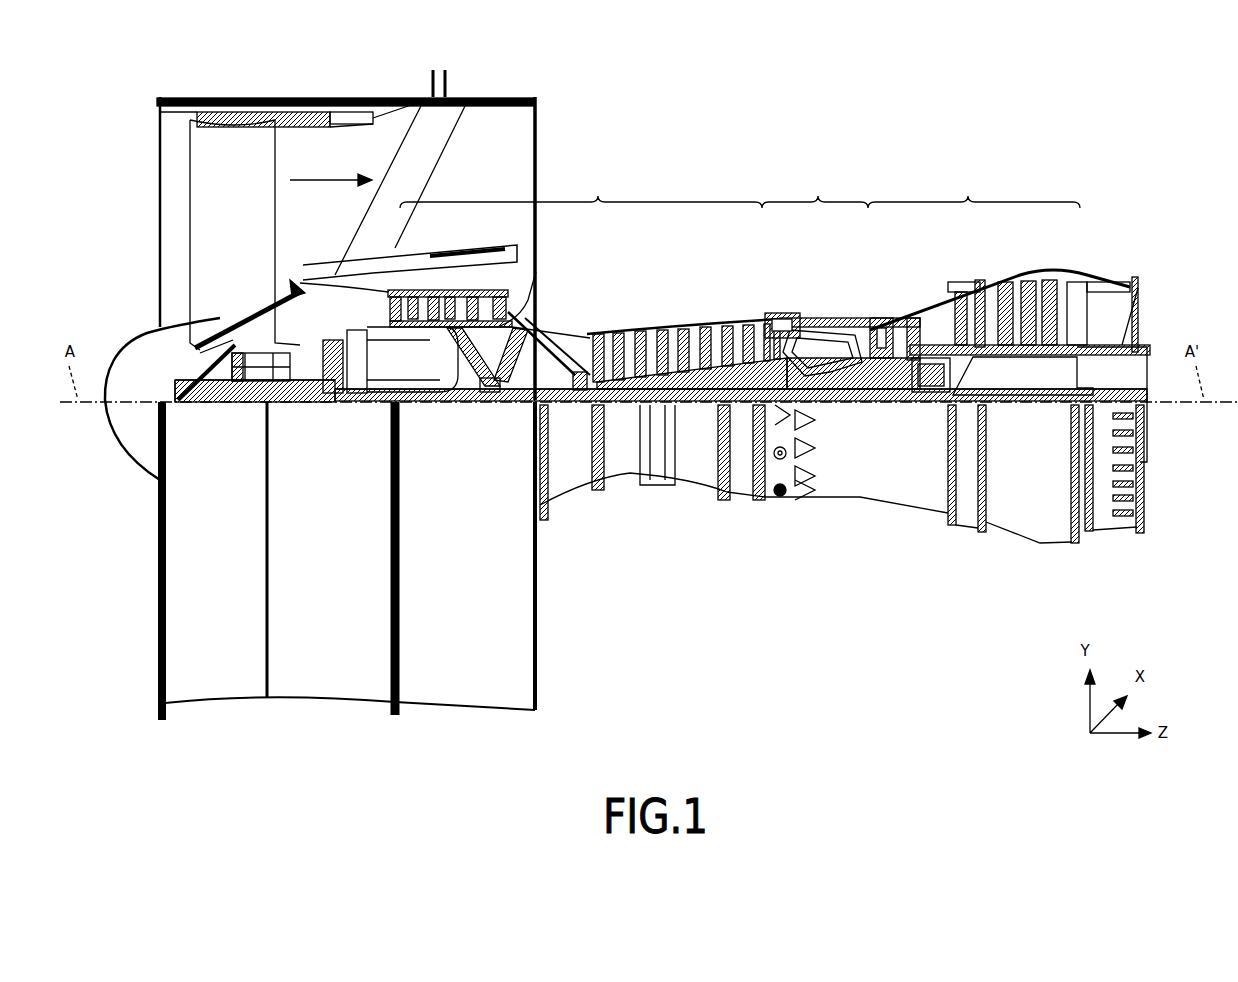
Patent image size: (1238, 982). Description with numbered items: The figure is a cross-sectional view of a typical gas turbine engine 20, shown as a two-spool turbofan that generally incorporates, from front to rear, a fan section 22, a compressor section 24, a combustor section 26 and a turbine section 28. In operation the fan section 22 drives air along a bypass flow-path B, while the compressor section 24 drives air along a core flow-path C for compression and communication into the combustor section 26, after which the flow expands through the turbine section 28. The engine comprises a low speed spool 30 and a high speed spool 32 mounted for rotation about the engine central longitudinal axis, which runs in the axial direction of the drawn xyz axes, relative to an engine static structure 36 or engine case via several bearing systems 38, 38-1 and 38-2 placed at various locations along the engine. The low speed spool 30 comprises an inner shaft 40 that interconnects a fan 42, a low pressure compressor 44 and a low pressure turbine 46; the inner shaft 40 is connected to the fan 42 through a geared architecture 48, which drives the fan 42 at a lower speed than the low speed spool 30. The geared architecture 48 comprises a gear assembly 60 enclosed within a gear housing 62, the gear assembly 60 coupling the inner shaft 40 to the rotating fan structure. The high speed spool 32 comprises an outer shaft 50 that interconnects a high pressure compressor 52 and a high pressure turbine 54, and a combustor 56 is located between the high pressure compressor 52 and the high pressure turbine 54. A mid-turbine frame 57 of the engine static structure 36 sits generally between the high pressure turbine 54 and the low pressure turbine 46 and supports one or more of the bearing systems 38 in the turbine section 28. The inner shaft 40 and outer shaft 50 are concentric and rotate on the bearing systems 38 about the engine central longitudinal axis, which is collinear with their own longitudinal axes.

The gas turbine engine 20 is at (865, 138).
The fan section 22 is at (392, 78).
The compressor section 24 is at (683, 276).
The combustor section 26 is at (842, 273).
The turbine section 28 is at (1010, 316).
The low speed spool 30 is at (704, 428).
The high speed spool 32 is at (738, 378).
The engine static structure 36 is at (327, 682).
The bearing system 38 is at (935, 396).
The bearing system 38-1 is at (241, 385).
The bearing system 38-2 is at (490, 394).
The inner shaft 40 is at (557, 408).
The fan 42 is at (245, 232).
The low pressure compressor 44 is at (536, 278).
The low pressure turbine 46 is at (1018, 278).
The geared architecture 48 is at (360, 430).
The outer shaft 50 is at (813, 385).
The high pressure compressor 52 is at (683, 328).
The high pressure turbine 54 is at (882, 318).
The combustor 56 is at (822, 338).
The mid-turbine frame 57 is at (913, 316).
The gear assembly 60 is at (365, 384).
The gear housing 62 is at (368, 355).
The bypass flow-path B is at (319, 186).
The core flow-path C is at (296, 288).